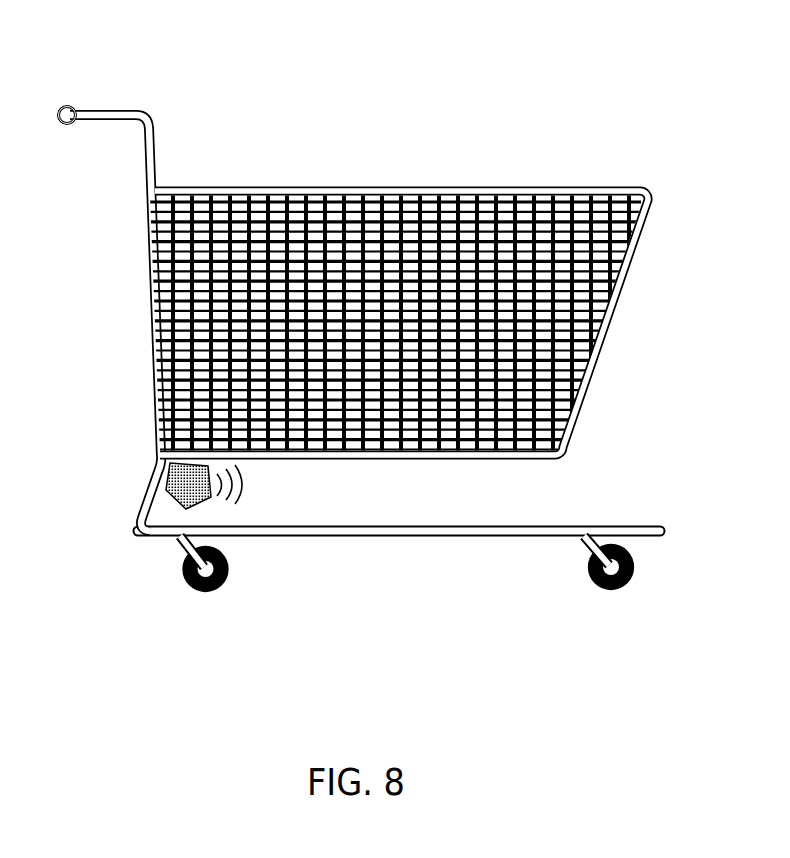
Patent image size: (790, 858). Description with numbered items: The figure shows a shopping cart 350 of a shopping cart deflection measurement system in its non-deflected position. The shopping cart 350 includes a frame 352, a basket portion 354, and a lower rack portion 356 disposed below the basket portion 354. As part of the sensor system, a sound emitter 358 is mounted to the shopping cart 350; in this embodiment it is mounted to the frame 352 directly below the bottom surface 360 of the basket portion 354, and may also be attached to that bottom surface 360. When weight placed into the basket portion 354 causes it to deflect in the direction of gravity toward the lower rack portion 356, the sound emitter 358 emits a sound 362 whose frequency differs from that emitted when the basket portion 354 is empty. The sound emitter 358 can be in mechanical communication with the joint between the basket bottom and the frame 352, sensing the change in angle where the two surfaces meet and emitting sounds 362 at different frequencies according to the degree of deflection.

The shopping cart 350 is at (390, 45).
The frame 352 is at (155, 153).
The basket portion 354 is at (571, 186).
The lower rack portion 356 is at (646, 526).
The sound emitter 358 is at (176, 484).
The bottom surface 360 is at (506, 461).
The sound 362 is at (258, 491).